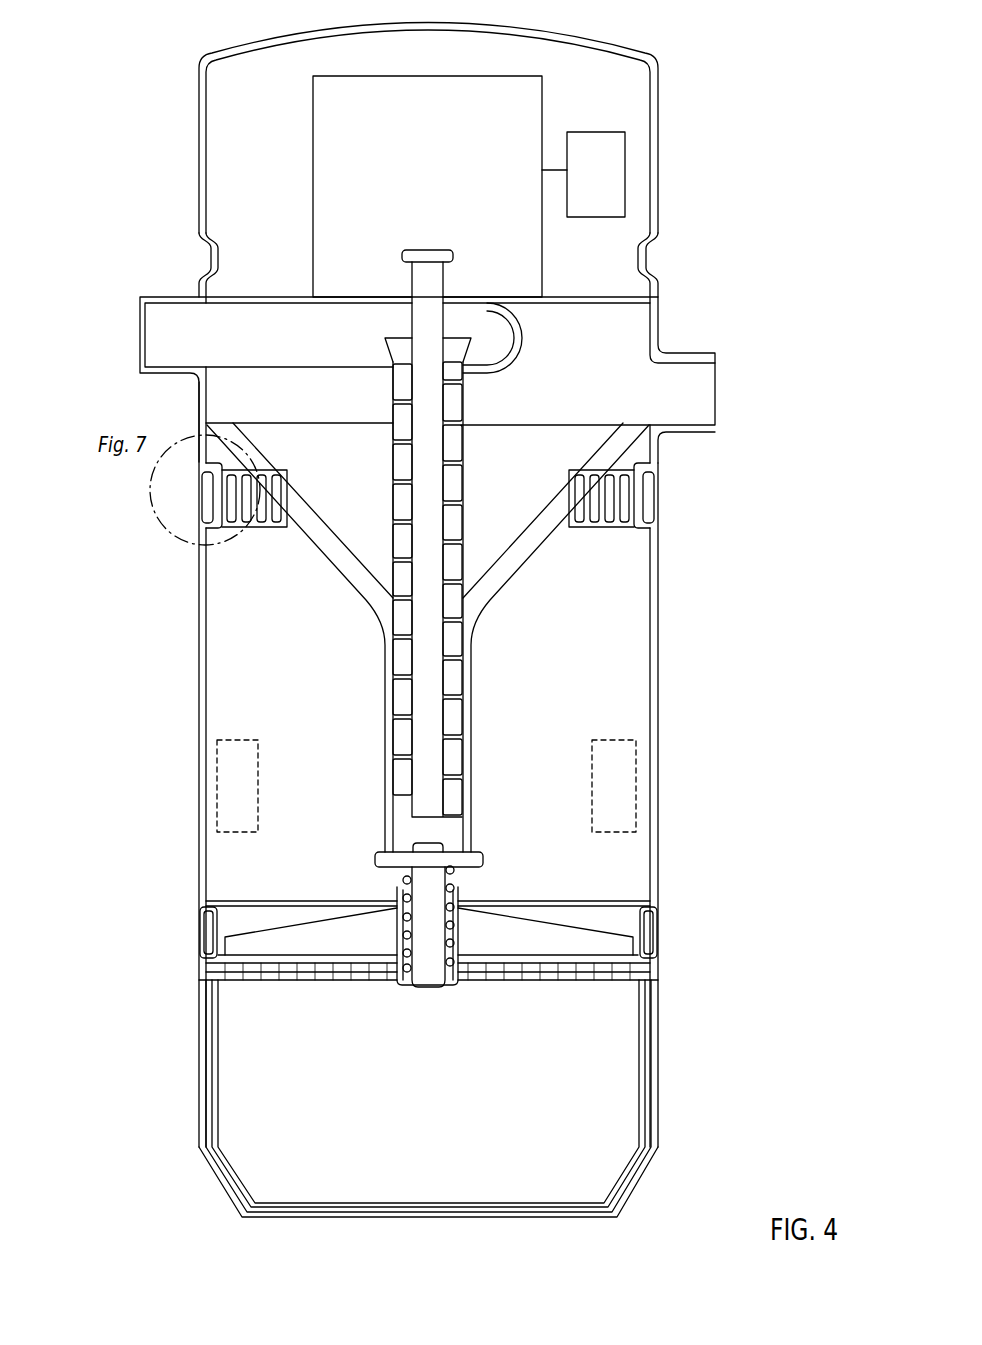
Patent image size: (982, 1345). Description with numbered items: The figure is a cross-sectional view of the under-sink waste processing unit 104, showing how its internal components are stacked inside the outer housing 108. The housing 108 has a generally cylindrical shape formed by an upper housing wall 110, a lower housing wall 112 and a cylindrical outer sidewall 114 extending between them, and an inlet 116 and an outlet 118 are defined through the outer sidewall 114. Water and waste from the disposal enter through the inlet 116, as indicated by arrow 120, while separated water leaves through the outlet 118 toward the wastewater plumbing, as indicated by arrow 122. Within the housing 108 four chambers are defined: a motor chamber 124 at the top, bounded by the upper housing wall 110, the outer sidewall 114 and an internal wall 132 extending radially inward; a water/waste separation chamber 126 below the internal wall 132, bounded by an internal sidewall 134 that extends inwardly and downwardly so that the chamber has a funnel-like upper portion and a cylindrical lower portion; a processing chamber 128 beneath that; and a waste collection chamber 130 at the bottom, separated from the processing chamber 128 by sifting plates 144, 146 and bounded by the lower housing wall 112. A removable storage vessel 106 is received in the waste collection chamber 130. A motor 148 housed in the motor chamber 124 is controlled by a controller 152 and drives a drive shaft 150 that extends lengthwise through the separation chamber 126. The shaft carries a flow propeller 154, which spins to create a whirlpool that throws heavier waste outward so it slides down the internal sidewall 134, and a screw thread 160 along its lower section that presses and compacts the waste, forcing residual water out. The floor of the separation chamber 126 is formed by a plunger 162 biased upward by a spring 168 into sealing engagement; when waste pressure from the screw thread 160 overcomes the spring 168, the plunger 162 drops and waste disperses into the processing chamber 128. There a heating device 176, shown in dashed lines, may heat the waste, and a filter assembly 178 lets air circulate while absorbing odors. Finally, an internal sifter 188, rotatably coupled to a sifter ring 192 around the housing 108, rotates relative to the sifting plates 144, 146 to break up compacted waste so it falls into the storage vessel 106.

The waste processing unit 104 is at (752, 127).
The removable storage vessel 106 is at (245, 1178).
The outer housing 108 is at (672, 590).
The upper housing wall 110 is at (542, 32).
The lower housing wall 112 is at (447, 1217).
The outer sidewall 114 is at (660, 655).
The inlet 116 is at (710, 368).
The outlet 118 is at (152, 310).
The arrow (incoming flow) 120 is at (728, 385).
The arrow (outgoing flow) 122 is at (130, 330).
The motor chamber 124 is at (281, 162).
The water/waste separation chamber 126 is at (569, 404).
The processing chamber 128 is at (343, 726).
The waste collection chamber 130 is at (429, 1089).
The internal wall 132 is at (287, 302).
The internal sidewall 134 is at (373, 608).
The sifting plate 144 is at (645, 966).
The sifting plate 146 is at (645, 974).
The motor 148 is at (439, 172).
The drive shaft 150 is at (428, 315).
The controller 152 is at (609, 179).
The flow propeller 154 is at (318, 440).
The screw thread 160 is at (458, 697).
The plunger 162 is at (428, 870).
The spring 168 is at (395, 880).
The heating device 176 is at (217, 792).
The filter assembly 178 is at (662, 494).
The internal sifter 188 is at (335, 937).
The sifter ring 192 is at (200, 935).